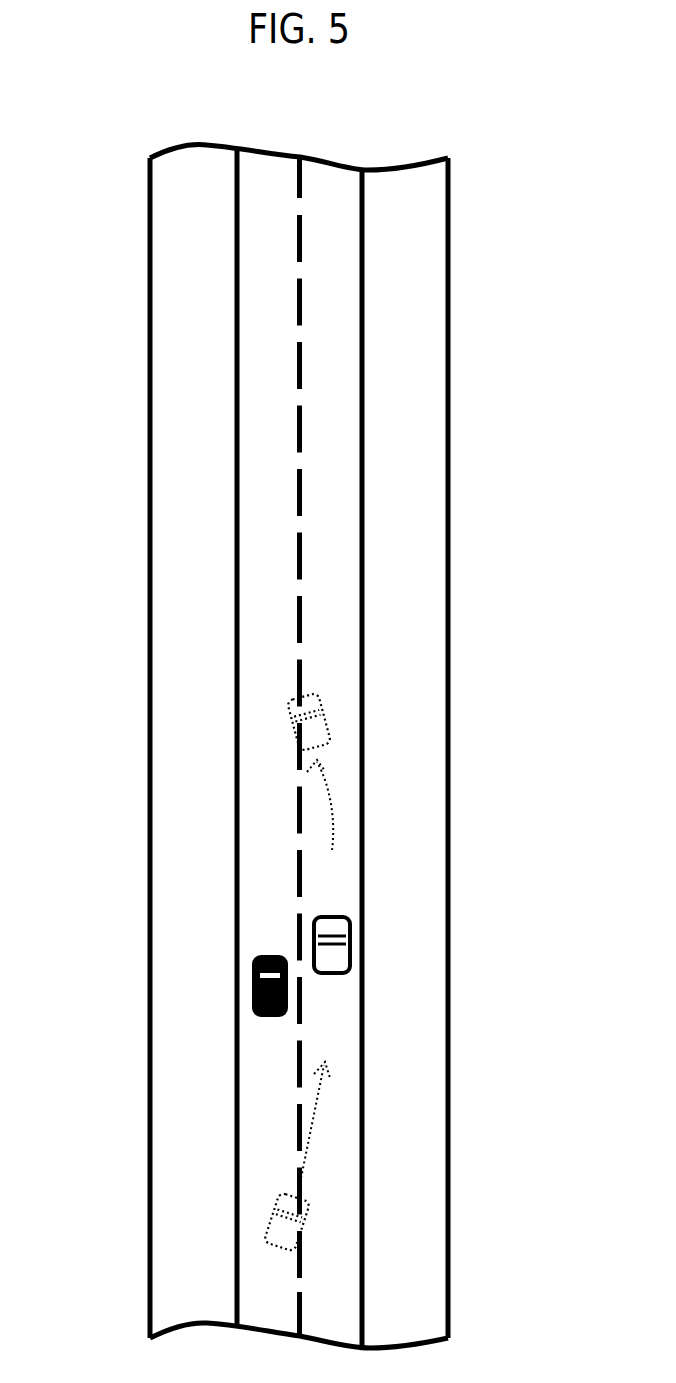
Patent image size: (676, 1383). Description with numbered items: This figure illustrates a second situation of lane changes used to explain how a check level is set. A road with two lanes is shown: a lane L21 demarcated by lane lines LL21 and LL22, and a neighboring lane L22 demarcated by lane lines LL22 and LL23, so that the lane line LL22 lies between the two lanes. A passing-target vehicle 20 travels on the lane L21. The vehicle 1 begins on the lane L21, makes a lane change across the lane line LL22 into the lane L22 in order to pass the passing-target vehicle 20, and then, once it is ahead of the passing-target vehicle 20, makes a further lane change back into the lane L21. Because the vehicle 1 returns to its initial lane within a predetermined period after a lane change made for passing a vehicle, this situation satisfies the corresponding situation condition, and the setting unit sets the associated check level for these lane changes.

The vehicle 1 is at (325, 717).
The passing-target vehicle 20 is at (252, 1005).
The lane L21 is at (263, 210).
The lane L22 is at (350, 212).
The lane line LL21 is at (238, 147).
The lane line LL22 is at (300, 155).
The lane line LL23 is at (362, 168).